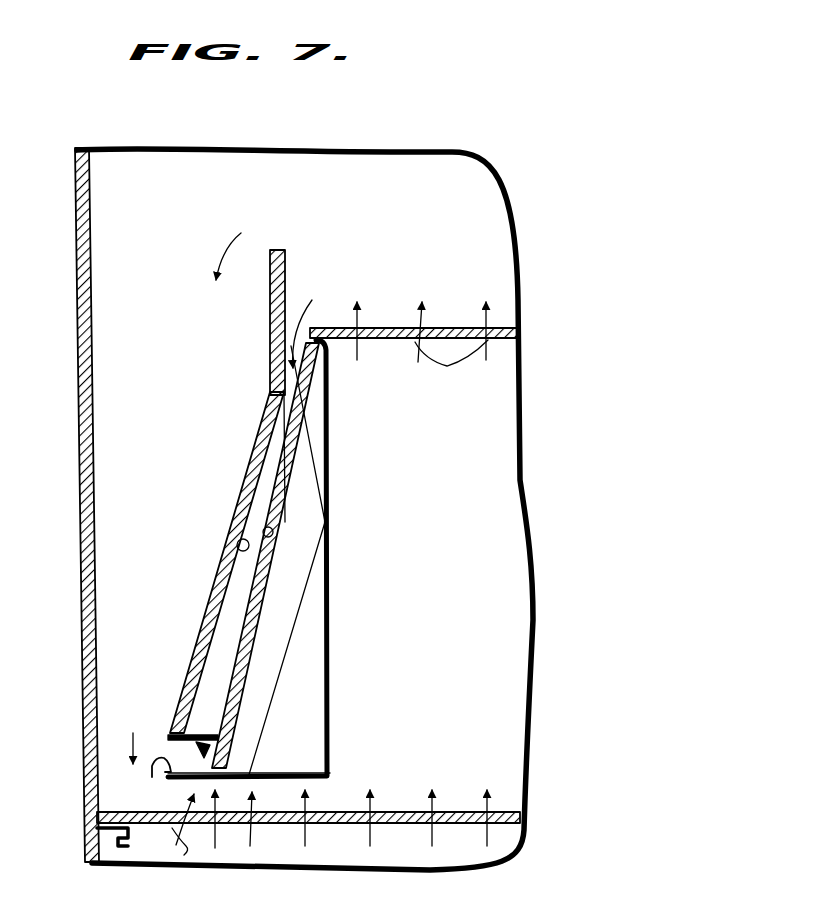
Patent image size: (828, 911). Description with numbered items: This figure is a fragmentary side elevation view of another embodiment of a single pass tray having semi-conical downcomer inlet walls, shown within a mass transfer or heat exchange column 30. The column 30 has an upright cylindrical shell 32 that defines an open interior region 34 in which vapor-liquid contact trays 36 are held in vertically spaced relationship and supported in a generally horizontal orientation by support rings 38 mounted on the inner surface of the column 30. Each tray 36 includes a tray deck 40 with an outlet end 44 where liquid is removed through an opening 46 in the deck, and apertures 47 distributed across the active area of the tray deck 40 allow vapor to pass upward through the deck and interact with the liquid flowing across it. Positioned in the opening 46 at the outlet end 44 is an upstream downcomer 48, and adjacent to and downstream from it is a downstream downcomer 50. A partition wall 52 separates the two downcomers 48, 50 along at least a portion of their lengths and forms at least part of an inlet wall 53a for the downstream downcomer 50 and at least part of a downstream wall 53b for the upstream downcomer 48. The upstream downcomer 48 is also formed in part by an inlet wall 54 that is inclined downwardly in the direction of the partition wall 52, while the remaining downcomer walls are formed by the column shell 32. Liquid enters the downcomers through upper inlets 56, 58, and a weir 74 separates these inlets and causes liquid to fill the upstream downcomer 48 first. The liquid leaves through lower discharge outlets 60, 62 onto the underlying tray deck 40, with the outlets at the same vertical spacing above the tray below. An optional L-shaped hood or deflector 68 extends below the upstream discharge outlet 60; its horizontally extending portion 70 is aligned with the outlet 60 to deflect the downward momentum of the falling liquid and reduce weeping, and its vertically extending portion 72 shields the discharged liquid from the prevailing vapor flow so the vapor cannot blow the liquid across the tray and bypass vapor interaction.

The mass transfer or heat exchange column 30 is at (70, 306).
The upright cylindrical shell 32 is at (84, 416).
The open interior region 34 is at (407, 176).
The vapor-liquid contact tray 36 is at (505, 322).
The support ring 38 is at (92, 855).
The tray deck 40 is at (440, 329).
The outlet end 44 is at (312, 344).
The opening 46 is at (326, 348).
The apertures 47 is at (321, 601).
The upstream downcomer 48 is at (322, 448).
The downstream downcomer 50 is at (166, 494).
The partition wall 52 is at (255, 456).
The inlet wall for the downstream downcomer 53a is at (236, 538).
The downstream wall for the upstream downcomer 53b is at (256, 540).
The inlet wall 54 is at (264, 532).
The upper inlet of upstream downcomer 56 is at (296, 310).
The upper inlet of downstream downcomer 58 is at (178, 256).
The lower discharge outlet of upstream downcomer 60 is at (205, 752).
The lower discharge outlet of downstream downcomer 62 is at (114, 744).
The L-shaped hood or deflector 68 is at (216, 850).
The horizontally extending portion 70 is at (150, 784).
The vertically extending portion 72 is at (216, 770).
The weir 74 is at (283, 250).